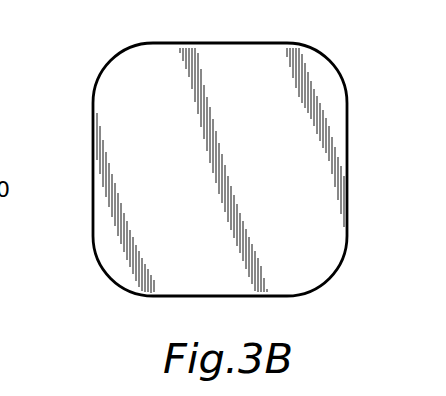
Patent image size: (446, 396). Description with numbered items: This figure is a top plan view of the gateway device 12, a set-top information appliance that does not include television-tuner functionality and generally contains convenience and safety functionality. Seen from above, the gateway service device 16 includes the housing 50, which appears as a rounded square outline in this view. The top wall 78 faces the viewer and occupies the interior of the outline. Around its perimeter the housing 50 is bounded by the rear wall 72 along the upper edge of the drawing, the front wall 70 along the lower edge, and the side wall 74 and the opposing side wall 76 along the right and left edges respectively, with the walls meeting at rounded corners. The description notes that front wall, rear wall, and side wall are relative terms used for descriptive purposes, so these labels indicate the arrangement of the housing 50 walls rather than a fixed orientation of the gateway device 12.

The gateway device 12 is at (355, 68).
The gateway service device 16 is at (359, 211).
The housing 50 is at (331, 258).
The front wall 70 is at (225, 298).
The rear wall 72 is at (223, 43).
The side wall 74 is at (348, 168).
The side wall 76 is at (93, 200).
The top wall 78 is at (115, 110).